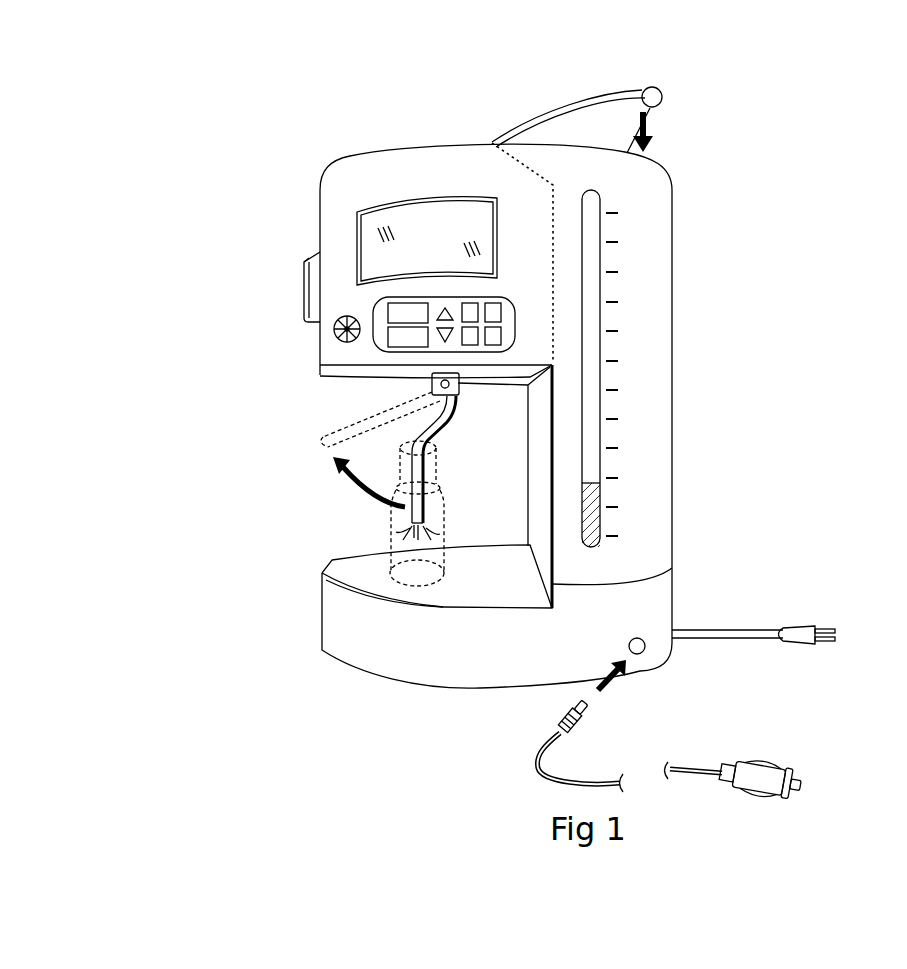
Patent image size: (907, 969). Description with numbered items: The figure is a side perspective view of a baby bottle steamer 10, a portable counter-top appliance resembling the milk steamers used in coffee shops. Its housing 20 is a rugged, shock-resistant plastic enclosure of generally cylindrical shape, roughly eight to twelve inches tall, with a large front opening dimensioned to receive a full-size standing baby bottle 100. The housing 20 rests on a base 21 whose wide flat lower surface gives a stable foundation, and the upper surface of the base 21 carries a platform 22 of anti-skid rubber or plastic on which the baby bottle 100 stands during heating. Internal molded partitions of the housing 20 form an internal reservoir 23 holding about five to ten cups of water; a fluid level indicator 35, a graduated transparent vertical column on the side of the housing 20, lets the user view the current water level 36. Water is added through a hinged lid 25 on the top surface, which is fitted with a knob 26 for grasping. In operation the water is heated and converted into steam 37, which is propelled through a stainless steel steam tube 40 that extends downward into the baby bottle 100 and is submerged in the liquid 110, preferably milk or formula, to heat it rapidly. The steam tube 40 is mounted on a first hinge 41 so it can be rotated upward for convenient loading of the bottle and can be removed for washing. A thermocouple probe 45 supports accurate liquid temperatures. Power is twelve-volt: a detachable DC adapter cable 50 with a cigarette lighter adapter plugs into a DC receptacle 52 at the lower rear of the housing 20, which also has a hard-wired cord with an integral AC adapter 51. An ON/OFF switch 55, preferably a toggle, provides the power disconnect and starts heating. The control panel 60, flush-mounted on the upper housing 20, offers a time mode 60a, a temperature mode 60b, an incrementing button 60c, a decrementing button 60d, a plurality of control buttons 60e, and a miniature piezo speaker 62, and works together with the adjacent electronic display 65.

The baby bottle steamer 10 is at (182, 120).
The housing 20 is at (672, 250).
The base 21 is at (357, 667).
The platform 22 is at (443, 607).
The internal reservoir 23 is at (553, 292).
The lid 25 is at (657, 113).
The knob 26 is at (660, 88).
The fluid level indicator 35 is at (590, 455).
The water level 36 is at (600, 515).
The steam 37 is at (400, 538).
The steam tube 40 is at (410, 434).
The first hinge 41 is at (432, 382).
The thermocouple probe 45 is at (440, 429).
The DC adapter cable 50 is at (737, 770).
The AC adapter 51 is at (757, 630).
The DC receptacle 52 is at (628, 650).
The ON/OFF switch 55 is at (306, 300).
The control panel 60 is at (373, 342).
The time mode 60a is at (417, 307).
The temperature mode 60b is at (400, 331).
The incrementing button 60c is at (447, 320).
The decrementing button 60d is at (452, 328).
The control buttons 60e is at (497, 330).
The miniature piezo speaker 62 is at (333, 329).
The electronic display 65 is at (366, 222).
The baby bottle 100 is at (392, 519).
The liquid 110 is at (426, 505).